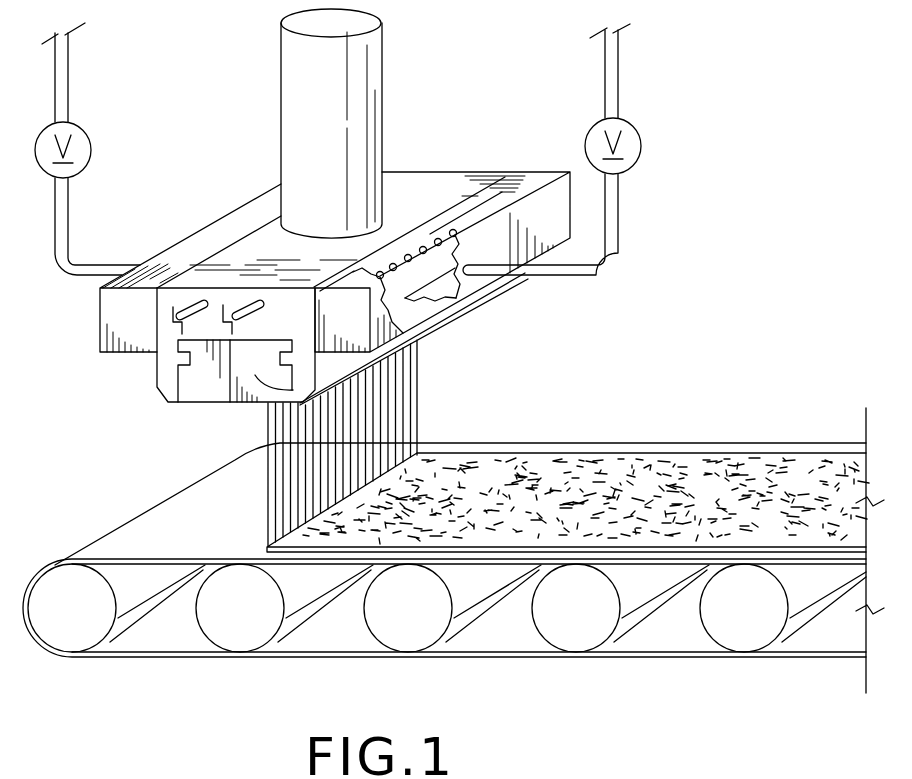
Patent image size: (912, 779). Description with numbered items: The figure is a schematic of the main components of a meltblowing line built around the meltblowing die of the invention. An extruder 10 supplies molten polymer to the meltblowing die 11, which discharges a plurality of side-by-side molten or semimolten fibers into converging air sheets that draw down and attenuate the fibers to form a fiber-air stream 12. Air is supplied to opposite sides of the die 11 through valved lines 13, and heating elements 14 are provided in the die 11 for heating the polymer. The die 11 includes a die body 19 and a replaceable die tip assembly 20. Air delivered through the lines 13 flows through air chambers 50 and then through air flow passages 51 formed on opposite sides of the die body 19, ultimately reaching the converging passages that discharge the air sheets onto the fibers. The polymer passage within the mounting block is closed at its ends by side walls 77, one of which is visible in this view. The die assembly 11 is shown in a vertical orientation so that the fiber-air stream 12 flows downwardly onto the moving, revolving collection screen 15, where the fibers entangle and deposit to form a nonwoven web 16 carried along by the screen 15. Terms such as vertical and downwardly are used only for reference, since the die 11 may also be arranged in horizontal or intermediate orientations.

The extruder 10 is at (370, 59).
The meltblowing die 11 is at (460, 172).
The fiber-air stream 12 is at (418, 422).
The valved lines 13 is at (69, 74).
The heating elements 14 is at (243, 313).
The revolving collection screen 15 is at (130, 542).
The nonwoven web 16 is at (697, 470).
The die body 19 is at (265, 245).
The replaceable die tip assembly 20 is at (192, 385).
The air chambers 50 is at (465, 286).
The air flow passages 51 is at (423, 246).
The side walls 77 is at (337, 386).